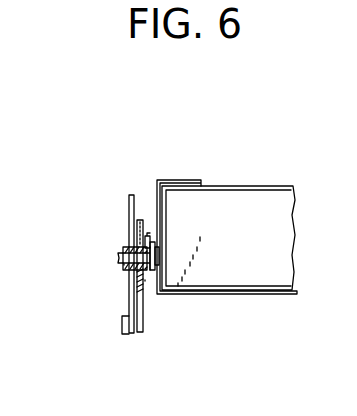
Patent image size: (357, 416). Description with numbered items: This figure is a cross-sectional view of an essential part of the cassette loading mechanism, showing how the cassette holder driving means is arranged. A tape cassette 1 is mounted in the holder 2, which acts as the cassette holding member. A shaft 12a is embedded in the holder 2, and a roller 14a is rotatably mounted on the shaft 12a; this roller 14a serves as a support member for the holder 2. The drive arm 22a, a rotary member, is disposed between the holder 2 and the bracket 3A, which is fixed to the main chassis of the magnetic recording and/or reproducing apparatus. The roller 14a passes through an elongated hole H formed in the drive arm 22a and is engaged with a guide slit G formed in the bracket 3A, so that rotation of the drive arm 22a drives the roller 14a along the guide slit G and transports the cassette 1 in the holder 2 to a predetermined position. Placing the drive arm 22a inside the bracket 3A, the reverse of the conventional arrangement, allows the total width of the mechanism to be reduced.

The tape cassette 1 is at (268, 185).
The cassette holder 2 is at (242, 294).
The bracket 3A is at (127, 330).
The shaft 12a is at (120, 250).
The roller 14a is at (148, 236).
The drive arm 22a is at (142, 330).
The elongated hole H is at (124, 264).
The guide slit G is at (145, 280).